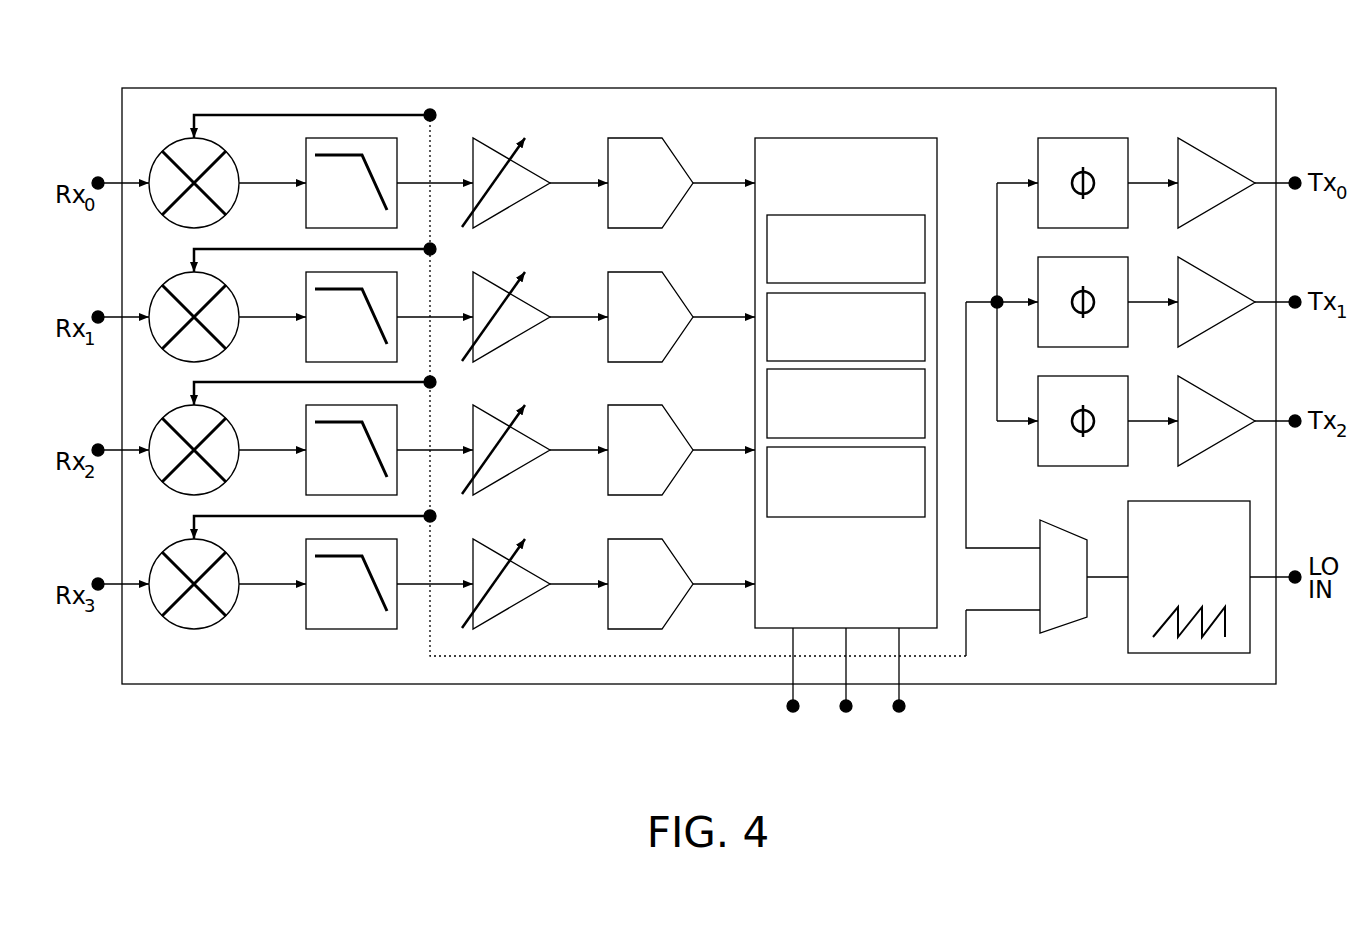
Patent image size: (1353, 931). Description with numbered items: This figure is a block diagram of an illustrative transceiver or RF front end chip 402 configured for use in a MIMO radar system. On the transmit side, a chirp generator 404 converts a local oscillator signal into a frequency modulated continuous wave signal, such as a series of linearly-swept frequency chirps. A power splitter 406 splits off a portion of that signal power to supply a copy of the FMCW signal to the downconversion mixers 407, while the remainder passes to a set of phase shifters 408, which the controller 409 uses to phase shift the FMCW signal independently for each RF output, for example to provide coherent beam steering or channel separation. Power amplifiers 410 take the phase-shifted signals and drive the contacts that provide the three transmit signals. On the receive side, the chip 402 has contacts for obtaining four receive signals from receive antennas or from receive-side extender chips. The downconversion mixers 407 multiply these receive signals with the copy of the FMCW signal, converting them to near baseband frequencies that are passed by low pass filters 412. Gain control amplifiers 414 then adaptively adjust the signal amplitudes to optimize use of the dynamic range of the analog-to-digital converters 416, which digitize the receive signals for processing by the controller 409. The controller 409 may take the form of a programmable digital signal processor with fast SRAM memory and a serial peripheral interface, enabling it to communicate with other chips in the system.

The transceiver chip 402 is at (742, 88).
The chirp generator 404 is at (1170, 653).
The power splitter 406 is at (1063, 633).
The downconversion mixers 407 is at (243, 628).
The phase shifters 408 is at (1135, 138).
The controller 409 is at (865, 138).
The power amplifiers 410 is at (1260, 138).
The low pass filters 412 is at (405, 628).
The gain control amplifiers 414 is at (555, 138).
The analog-to-digital converters 416 is at (692, 138).